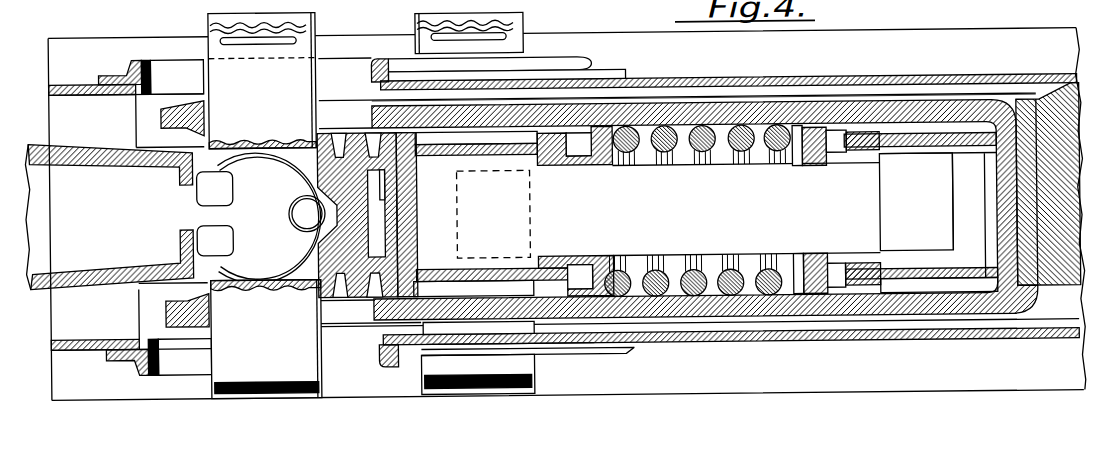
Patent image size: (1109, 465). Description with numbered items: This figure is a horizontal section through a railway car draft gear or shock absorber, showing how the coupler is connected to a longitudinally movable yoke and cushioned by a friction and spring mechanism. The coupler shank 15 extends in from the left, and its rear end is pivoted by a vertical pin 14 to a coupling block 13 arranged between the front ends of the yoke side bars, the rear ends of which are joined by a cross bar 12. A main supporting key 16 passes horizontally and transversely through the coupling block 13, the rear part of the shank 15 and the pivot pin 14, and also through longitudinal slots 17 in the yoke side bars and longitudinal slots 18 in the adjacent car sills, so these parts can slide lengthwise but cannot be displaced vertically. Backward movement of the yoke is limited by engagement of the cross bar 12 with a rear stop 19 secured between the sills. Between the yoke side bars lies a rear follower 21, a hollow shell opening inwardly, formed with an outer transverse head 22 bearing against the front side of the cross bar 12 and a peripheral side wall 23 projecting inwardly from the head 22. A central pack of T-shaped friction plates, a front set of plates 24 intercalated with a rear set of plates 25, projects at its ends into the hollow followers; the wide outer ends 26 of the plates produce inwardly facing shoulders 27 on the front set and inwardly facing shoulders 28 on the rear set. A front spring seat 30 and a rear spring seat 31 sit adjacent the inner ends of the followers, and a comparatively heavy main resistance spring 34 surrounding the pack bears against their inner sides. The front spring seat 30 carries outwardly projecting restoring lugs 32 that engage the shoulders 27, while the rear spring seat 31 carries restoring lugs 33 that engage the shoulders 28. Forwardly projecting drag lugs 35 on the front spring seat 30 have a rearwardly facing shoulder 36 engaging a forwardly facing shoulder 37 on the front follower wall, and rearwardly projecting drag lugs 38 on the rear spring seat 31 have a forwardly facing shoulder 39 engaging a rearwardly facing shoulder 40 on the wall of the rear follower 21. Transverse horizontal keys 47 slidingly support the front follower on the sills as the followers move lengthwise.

The cross bar 12 is at (567, 214).
The coupling block 13 is at (387, 174).
The vertical pin 14 is at (326, 212).
The shank 15 is at (173, 216).
The main supporting key 16 is at (367, 204).
The longitudinal slots 17 is at (369, 191).
The longitudinal slots 18 is at (129, 218).
The rear stop 19 is at (1072, 300).
The rear follower 21 is at (997, 140).
The outer transverse head 22 is at (403, 217).
The peripheral side wall 23 is at (483, 157).
The front set of friction plates 24 is at (746, 209).
The rear set of friction plates 25 is at (468, 254).
The wide outer ends 26 is at (697, 211).
The inwardly facing shoulders 27 is at (536, 255).
The inwardly facing shoulders 28 is at (887, 260).
The front spring seat 30 is at (615, 254).
The rear spring seat 31 is at (818, 128).
The restoring lugs 32 is at (568, 165).
The restoring lugs 33 is at (839, 131).
The main resistance spring 34 is at (730, 298).
The drag lugs 35 is at (588, 127).
The rearwardly facing shoulder 36 is at (543, 130).
The forwardly facing shoulder 37 is at (538, 136).
The drag lugs 38 is at (865, 130).
The forwardly facing shoulder 39 is at (913, 104).
The rearwardly facing shoulder 40 is at (887, 138).
The transverse horizontal keys 47 is at (420, 381).